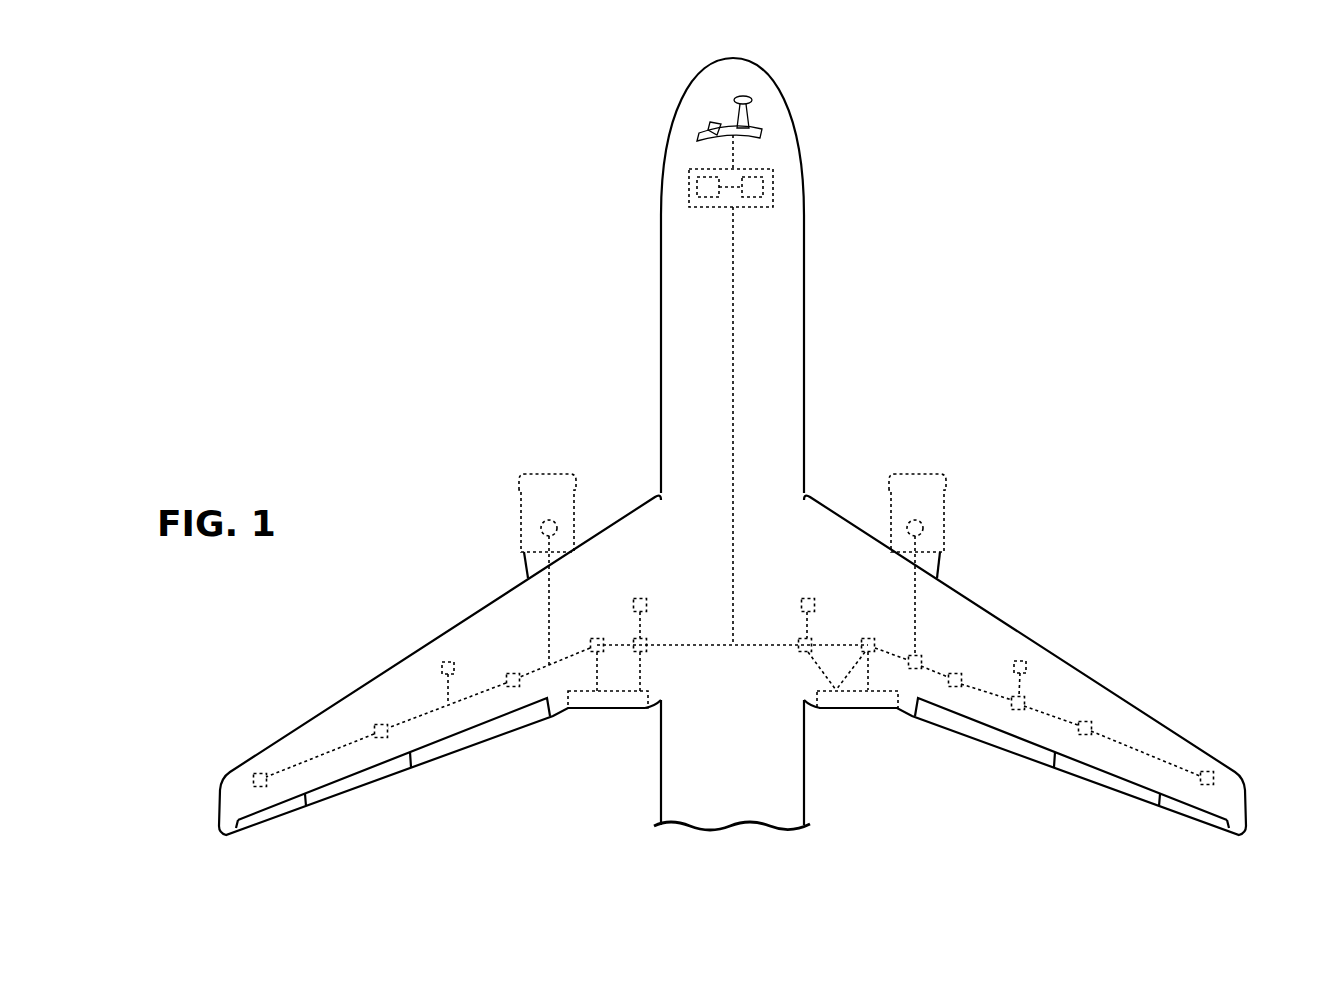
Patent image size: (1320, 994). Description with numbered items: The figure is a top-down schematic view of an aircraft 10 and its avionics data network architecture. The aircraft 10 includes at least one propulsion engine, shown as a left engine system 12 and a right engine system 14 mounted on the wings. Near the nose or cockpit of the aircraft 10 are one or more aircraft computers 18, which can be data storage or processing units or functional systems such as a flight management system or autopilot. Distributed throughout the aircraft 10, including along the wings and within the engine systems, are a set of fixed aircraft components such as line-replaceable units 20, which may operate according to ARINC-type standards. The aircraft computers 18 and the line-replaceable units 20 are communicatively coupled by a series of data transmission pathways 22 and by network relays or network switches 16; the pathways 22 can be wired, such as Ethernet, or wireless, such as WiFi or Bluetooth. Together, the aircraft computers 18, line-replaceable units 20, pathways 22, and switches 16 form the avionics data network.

The aircraft 10 is at (564, 86).
The left engine system 12 is at (551, 487).
The right engine system 14 is at (935, 487).
The network switches 16 is at (597, 652).
The aircraft computers 18 is at (689, 201).
The line-replaceable units 20 is at (560, 525).
The data transmission pathways 22 is at (732, 372).